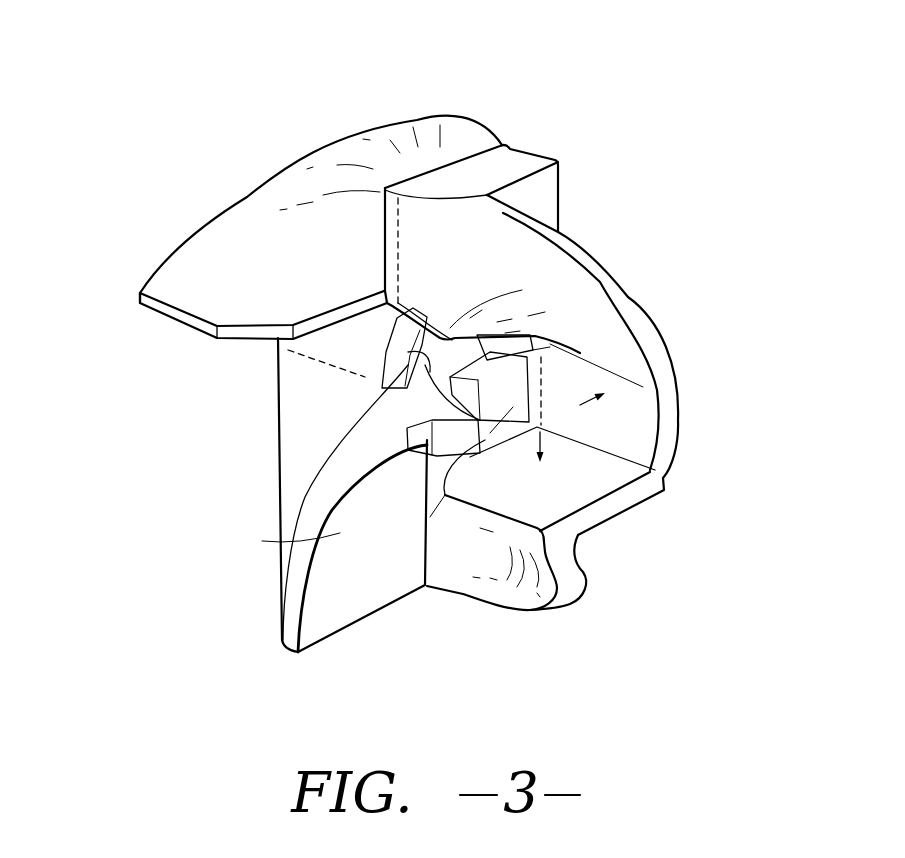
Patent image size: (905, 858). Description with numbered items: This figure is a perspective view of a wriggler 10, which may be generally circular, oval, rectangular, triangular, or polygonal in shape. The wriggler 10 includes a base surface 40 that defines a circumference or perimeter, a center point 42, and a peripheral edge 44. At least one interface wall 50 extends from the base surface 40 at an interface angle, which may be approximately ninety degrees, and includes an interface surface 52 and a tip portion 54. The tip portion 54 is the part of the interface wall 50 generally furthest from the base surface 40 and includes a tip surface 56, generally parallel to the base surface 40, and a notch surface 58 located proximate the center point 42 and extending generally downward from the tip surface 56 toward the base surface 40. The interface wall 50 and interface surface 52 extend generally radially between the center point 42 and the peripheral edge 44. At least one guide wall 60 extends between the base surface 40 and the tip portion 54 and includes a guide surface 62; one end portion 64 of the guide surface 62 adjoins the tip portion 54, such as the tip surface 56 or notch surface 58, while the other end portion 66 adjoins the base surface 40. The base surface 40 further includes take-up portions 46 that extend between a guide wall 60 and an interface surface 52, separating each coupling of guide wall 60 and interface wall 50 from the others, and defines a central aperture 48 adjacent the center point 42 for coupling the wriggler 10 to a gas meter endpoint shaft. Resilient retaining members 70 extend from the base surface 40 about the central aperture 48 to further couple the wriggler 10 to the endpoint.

The wriggler 10 is at (227, 95).
The base surface 40 is at (614, 411).
The center point 42 is at (627, 363).
The peripheral edge 44 is at (668, 470).
The take-up portions 46 is at (612, 430).
The central aperture 48 is at (455, 367).
The interface wall 50 is at (457, 182).
The interface surface 52 is at (537, 507).
The tip portion 54 is at (386, 218).
The tip surface 56 is at (155, 307).
The notch surface 58 is at (247, 333).
The guide wall 60 is at (490, 268).
The guide surface 62 is at (510, 282).
The end portion 64 is at (223, 262).
The end portion 66 is at (630, 363).
The retaining members 70 is at (427, 447).